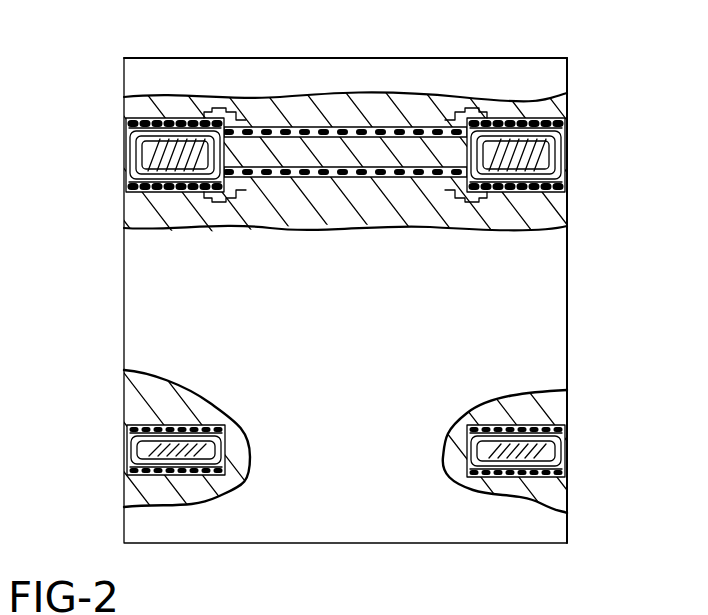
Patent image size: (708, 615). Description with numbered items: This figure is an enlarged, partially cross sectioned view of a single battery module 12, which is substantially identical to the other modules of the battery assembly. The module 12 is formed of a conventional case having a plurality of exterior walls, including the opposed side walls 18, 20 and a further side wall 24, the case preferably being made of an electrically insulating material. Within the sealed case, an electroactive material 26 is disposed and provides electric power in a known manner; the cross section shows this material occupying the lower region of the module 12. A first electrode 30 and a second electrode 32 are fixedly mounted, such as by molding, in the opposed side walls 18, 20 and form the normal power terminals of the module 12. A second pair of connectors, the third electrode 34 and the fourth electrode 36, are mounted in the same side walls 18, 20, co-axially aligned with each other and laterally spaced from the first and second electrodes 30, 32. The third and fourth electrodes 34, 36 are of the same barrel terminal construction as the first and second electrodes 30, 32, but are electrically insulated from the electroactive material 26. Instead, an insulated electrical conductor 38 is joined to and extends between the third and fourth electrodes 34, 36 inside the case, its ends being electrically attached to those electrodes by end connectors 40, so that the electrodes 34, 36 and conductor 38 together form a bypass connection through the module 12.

The battery module 12 is at (408, 8).
The side wall 18 is at (133, 275).
The side wall 20 is at (567, 288).
The side wall 24 is at (462, 58).
The electroactive material 26 is at (140, 400).
The first electrode 30 is at (127, 451).
The second electrode 32 is at (567, 450).
The third electrode 34 is at (567, 148).
The fourth electrode 36 is at (124, 118).
The insulated electrical conductor 38 is at (275, 148).
The end connector 40 is at (205, 118).